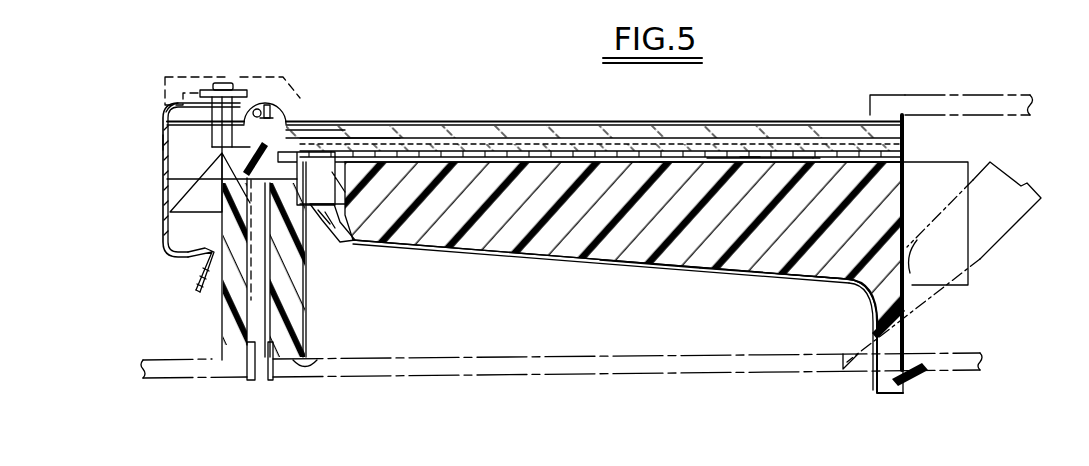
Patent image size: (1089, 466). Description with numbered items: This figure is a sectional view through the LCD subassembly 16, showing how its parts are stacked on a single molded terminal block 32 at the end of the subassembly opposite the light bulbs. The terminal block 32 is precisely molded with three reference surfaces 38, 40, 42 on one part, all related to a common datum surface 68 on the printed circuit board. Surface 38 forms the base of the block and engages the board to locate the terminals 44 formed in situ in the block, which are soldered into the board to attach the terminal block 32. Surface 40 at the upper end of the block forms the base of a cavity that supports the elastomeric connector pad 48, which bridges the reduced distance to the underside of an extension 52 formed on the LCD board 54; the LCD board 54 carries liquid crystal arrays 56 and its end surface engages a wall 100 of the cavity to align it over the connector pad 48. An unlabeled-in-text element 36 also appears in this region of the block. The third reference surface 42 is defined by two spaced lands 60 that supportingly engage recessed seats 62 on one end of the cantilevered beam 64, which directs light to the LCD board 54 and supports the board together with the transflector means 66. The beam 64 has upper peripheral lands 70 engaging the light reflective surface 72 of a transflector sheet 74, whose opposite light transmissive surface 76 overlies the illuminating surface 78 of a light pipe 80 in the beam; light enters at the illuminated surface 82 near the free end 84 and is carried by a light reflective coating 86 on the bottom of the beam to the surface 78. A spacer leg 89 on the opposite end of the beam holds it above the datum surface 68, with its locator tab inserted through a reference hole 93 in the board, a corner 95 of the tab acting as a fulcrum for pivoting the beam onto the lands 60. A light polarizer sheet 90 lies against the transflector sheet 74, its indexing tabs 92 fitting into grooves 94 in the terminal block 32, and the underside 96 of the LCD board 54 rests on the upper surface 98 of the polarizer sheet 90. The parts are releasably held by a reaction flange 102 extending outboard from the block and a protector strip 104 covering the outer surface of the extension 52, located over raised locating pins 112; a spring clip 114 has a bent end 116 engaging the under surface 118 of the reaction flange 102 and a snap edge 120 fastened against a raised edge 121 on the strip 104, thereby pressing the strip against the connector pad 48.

The LCD subassembly 16 is at (628, 115).
The terminal block 32 is at (220, 310).
The clip block 36 is at (288, 120).
The reference surface 38 is at (301, 360).
The reference surface 40 is at (222, 158).
The reference surface 42 is at (330, 195).
The terminals 44 is at (251, 380).
The elastomeric connector pad 48 is at (259, 114).
The extension 52 is at (252, 100).
The LCD board 54 is at (514, 127).
The liquid crystal arrays 56 is at (467, 122).
The lands 60 is at (318, 225).
The recessed seats 62 is at (318, 218).
The beam 64 is at (701, 164).
The transflector means 66 is at (853, 143).
The datum surface 68 is at (512, 353).
The upper peripheral lands 70 is at (381, 126).
The light reflective surface 72 is at (546, 155).
The transflector sheet 74 is at (672, 130).
The light transmissive surface 76 is at (470, 152).
The illuminating surface 78 is at (505, 152).
The light pipe 80 is at (640, 249).
The illuminated surface 82 is at (907, 178).
The free end 84 is at (974, 170).
The light reflective coating 86 is at (703, 262).
The spacer leg 89 is at (895, 338).
The light polarizer sheet 90 is at (914, 383).
The indexing tabs 92 is at (293, 147).
The reference hole 93 is at (857, 368).
The grooves 94 is at (345, 140).
The corner 95 is at (910, 367).
The underside 96 is at (822, 142).
The upper surface 98 is at (750, 157).
The wall 100 is at (172, 144).
The reaction flange 102 is at (173, 254).
The protector strip 104 is at (180, 119).
The locating pins 112 is at (222, 80).
The spring clip 114 is at (155, 221).
The bent end 116 is at (193, 268).
The under surface 118 is at (205, 283).
The snap edge 120 is at (270, 111).
The raised edge 121 is at (265, 107).